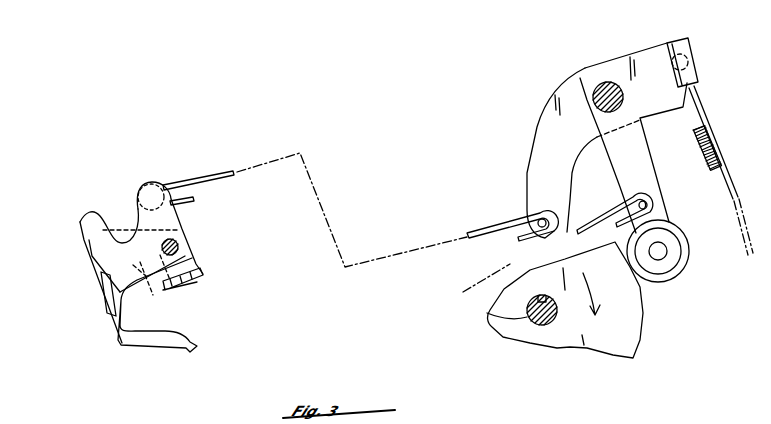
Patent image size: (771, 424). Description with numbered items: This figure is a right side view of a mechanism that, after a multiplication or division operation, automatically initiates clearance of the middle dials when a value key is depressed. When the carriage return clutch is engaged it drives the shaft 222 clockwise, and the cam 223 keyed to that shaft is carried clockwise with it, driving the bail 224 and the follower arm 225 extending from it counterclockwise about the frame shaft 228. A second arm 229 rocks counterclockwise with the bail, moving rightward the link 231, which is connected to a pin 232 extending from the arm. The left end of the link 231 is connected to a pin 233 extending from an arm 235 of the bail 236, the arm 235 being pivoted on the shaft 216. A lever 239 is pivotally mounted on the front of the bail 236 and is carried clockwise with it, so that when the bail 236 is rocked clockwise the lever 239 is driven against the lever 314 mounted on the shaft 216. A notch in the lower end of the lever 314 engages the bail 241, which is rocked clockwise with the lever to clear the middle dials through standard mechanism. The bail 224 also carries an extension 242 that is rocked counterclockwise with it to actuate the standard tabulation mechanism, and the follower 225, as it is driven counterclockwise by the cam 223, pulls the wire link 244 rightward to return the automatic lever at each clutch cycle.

The shaft 216 is at (181, 248).
The shaft 222 is at (490, 314).
The cam 223 is at (638, 324).
The bail 224 is at (668, 43).
The follower arm 225 is at (663, 211).
The frame shaft 228 is at (603, 83).
The second arm 229 is at (535, 137).
The link 231 is at (213, 172).
The pin 232 is at (542, 228).
The pin 233 is at (150, 190).
The arm 235 is at (137, 282).
The bail 236 is at (91, 256).
The lever 239 is at (81, 235).
The bail 241 is at (193, 275).
The extension 242 is at (683, 50).
The wire link 244 is at (620, 208).
The lever 314 is at (95, 218).